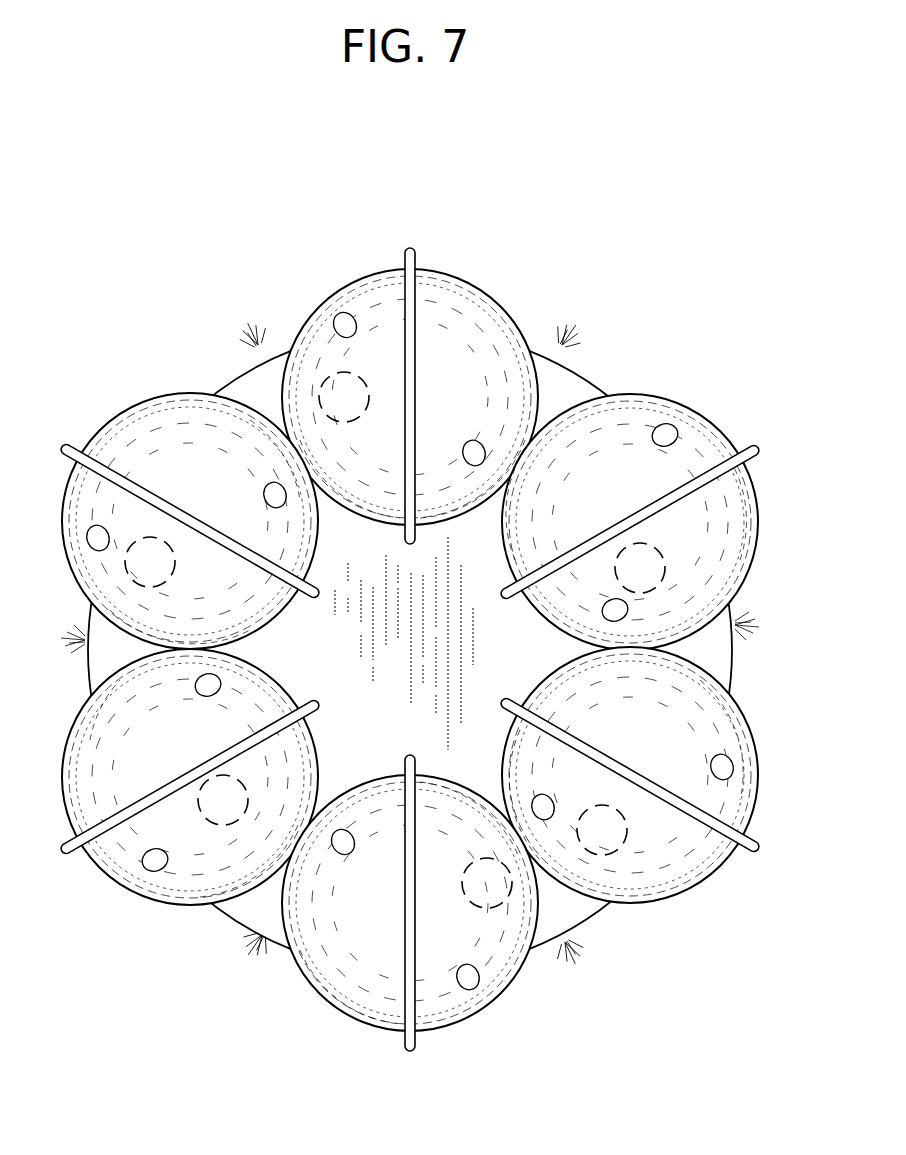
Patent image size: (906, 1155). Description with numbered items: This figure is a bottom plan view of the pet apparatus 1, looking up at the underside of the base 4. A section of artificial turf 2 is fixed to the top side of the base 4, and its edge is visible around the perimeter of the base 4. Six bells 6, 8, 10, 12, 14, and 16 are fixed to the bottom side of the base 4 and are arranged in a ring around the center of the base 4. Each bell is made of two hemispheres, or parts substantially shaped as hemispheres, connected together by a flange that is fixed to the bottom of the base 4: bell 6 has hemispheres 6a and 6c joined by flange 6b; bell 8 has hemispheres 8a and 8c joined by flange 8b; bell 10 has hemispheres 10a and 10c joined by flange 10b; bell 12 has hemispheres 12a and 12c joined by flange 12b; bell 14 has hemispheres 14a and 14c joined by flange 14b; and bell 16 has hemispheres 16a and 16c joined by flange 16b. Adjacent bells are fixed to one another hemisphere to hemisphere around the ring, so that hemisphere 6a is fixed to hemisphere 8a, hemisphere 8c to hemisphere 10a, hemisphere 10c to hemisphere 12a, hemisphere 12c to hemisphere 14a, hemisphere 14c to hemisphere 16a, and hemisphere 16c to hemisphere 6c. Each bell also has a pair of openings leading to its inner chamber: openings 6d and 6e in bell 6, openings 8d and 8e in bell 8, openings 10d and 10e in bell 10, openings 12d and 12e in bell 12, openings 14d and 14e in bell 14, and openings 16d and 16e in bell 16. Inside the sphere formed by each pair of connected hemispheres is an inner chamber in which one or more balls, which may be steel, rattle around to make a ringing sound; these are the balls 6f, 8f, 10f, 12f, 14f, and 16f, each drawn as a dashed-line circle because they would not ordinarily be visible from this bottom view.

The pet apparatus 1 is at (538, 263).
The section of artificial turf 2 is at (263, 343).
The base 4 is at (314, 654).
The bell 6 is at (172, 467).
The hemisphere 6a is at (240, 586).
The flange 6b is at (139, 490).
The hemisphere 6c is at (219, 499).
The opening 6d is at (270, 490).
The opening 6e is at (100, 538).
The ball 6f is at (140, 571).
The bell 8 is at (376, 319).
The hemisphere 8a is at (390, 456).
The flange 8b is at (414, 348).
The hemisphere 8c is at (474, 376).
The opening 8d is at (473, 447).
The opening 8e is at (350, 331).
The ball 8f is at (334, 406).
The bell 10 is at (587, 472).
The hemisphere 10a is at (595, 506).
The flange 10b is at (623, 527).
The hemisphere 10c is at (700, 546).
The opening 10d is at (618, 610).
The opening 10e is at (660, 436).
The ball 10f is at (631, 577).
The bell 12 is at (626, 702).
The hemisphere 12a is at (677, 766).
The flange 12b is at (587, 750).
The hemisphere 12c is at (570, 769).
The opening 12d is at (548, 807).
The opening 12e is at (718, 762).
The ball 12f is at (588, 839).
The bell 14 is at (375, 917).
The hemisphere 14a is at (455, 855).
The flange 14b is at (408, 847).
The hemisphere 14c is at (385, 952).
The opening 14d is at (349, 849).
The opening 14e is at (469, 972).
The ball 14f is at (469, 892).
The bell 16 is at (158, 753).
The hemisphere 16a is at (263, 856).
The flange 16b is at (165, 789).
The hemisphere 16c is at (154, 717).
The opening 16d is at (206, 690).
The opening 16e is at (157, 860).
The ball 16f is at (204, 809).